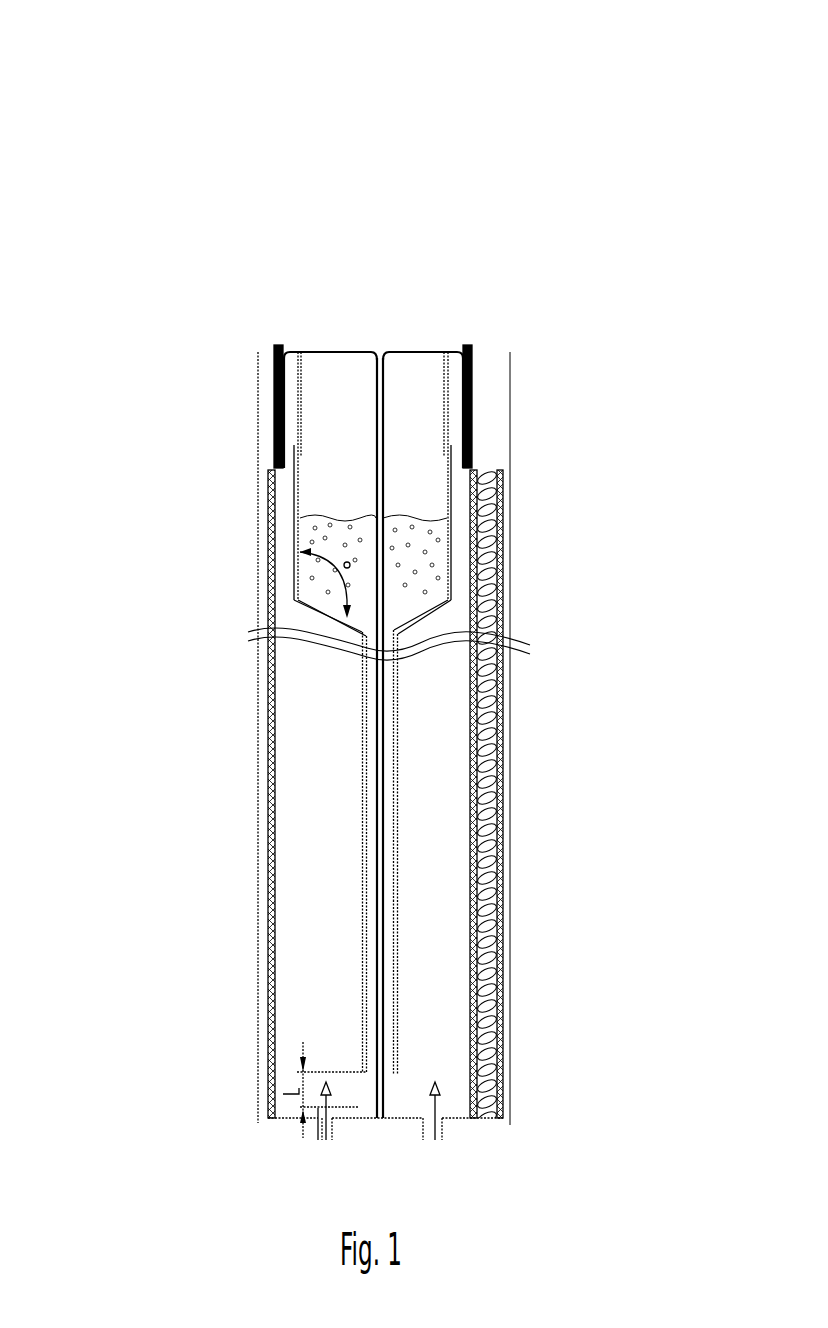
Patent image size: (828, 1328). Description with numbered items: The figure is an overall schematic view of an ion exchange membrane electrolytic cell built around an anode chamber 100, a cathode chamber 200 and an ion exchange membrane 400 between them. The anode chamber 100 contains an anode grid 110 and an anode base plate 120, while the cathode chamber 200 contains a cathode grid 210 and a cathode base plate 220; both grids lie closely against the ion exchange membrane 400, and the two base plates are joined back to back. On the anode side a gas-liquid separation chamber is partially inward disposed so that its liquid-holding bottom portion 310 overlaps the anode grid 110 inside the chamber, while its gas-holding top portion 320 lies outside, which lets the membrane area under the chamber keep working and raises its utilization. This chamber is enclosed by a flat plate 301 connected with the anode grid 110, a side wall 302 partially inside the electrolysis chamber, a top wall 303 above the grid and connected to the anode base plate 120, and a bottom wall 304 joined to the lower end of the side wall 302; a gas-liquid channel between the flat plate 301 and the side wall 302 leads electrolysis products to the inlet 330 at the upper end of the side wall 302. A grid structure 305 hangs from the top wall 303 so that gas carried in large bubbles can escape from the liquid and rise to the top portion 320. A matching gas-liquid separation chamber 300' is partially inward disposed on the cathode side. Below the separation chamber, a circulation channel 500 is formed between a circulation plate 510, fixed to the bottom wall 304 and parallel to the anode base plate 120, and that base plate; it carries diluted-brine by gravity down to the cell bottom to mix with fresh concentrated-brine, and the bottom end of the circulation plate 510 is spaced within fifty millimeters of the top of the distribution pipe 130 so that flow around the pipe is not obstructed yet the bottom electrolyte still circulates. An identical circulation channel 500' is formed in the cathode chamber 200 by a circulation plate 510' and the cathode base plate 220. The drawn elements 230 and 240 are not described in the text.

The anode chamber 100 is at (308, 898).
The anode grid 110 is at (267, 970).
The anode base plate 120 is at (377, 433).
The distribution pipe 130 is at (322, 1120).
The cathode chamber 200 is at (427, 932).
The cathode grid 210 is at (497, 752).
The cathode base plate 220 is at (400, 727).
The heating coil 230 is at (497, 1077).
The housing wall 240 is at (505, 1113).
The gas-liquid separation chamber 300' is at (522, 315).
The flat plate 301 is at (279, 462).
The side wall 302 is at (303, 582).
The top wall 303 is at (353, 380).
The bottom wall 304 is at (350, 625).
The grid structure 305 is at (297, 405).
The bottom portion 310 is at (298, 553).
The top portion 320 is at (355, 380).
The inlet 330 is at (295, 442).
The ion exchange membrane 400 is at (258, 800).
The circulation channel 500 is at (225, 1011).
The circulation channel 500' is at (520, 981).
The circulation plate 510 is at (223, 843).
The circulation plate 510' is at (527, 765).